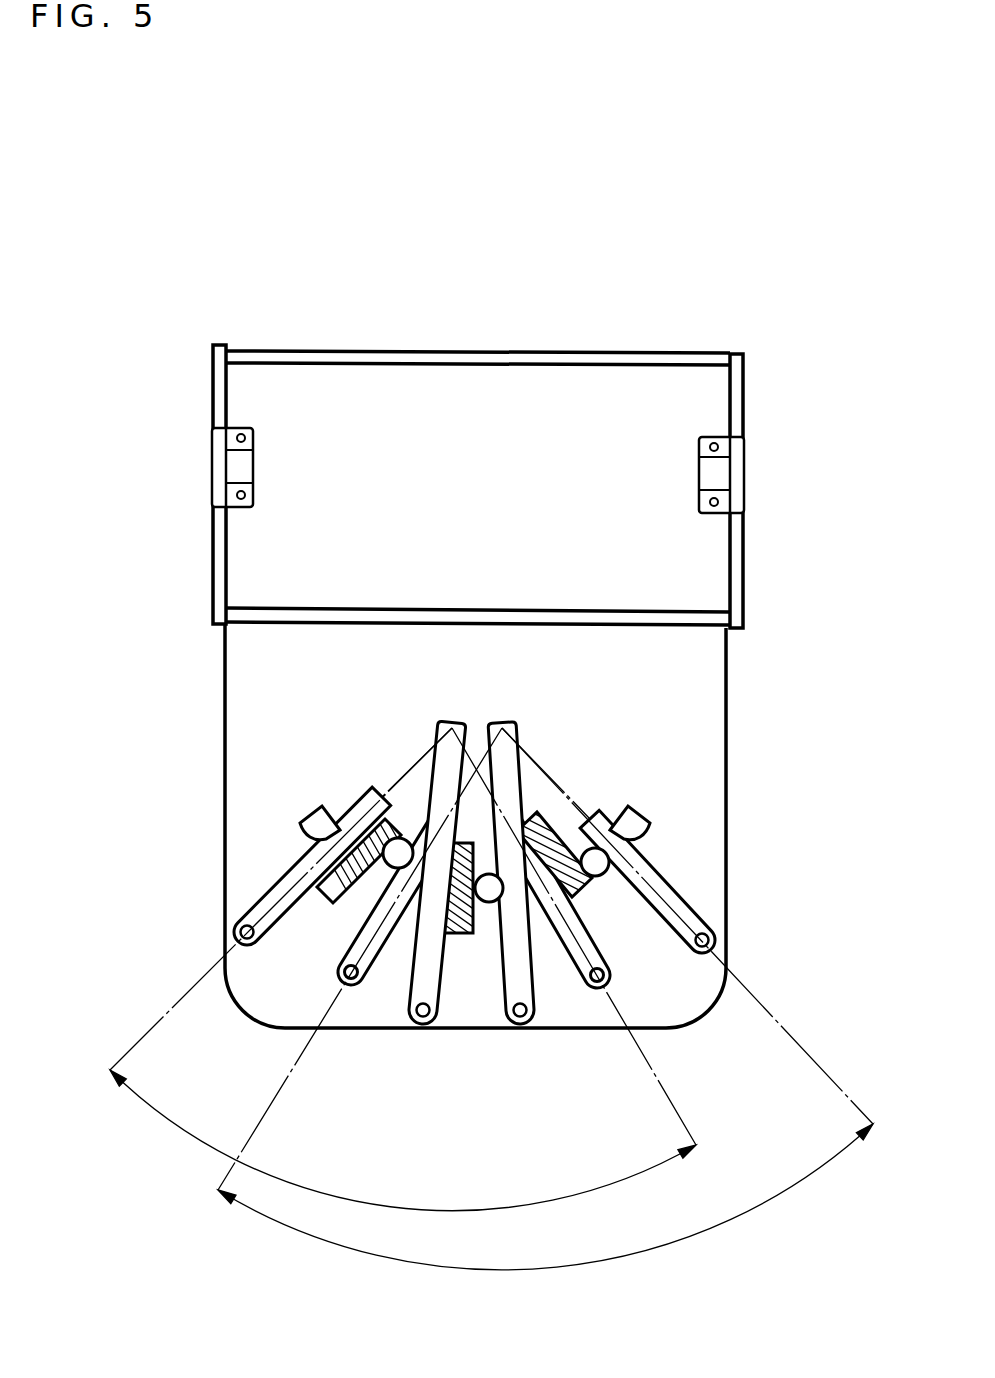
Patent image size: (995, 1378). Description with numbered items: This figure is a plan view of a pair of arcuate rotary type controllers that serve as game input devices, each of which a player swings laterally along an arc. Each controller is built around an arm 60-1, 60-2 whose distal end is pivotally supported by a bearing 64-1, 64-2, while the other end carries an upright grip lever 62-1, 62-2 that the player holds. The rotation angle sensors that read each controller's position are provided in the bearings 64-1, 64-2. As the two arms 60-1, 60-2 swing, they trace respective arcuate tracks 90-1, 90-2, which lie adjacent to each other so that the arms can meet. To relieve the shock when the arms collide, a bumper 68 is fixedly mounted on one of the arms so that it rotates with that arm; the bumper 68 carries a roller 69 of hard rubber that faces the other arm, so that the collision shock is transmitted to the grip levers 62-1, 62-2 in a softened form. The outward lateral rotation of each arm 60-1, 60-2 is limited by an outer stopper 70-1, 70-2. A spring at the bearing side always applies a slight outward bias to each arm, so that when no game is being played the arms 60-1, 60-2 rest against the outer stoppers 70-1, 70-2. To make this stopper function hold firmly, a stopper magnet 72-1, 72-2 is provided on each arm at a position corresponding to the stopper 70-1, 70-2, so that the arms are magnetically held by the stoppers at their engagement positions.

The arm 60-1 is at (296, 866).
The arm 60-2 is at (655, 870).
The upright grip lever 62-1 is at (236, 932).
The upright grip lever 62-2 is at (714, 940).
The bearing 64-1 is at (450, 717).
The bearing 64-2 is at (503, 717).
The bumper 68 is at (355, 888).
The roller 69 is at (603, 875).
The outer stopper 70-1 is at (320, 820).
The outer stopper 70-2 is at (632, 820).
The stopper magnet 72-1 is at (350, 812).
The stopper magnet 72-2 is at (598, 826).
The arcuate track 90-1 is at (196, 1140).
The arcuate track 90-2 is at (693, 1228).